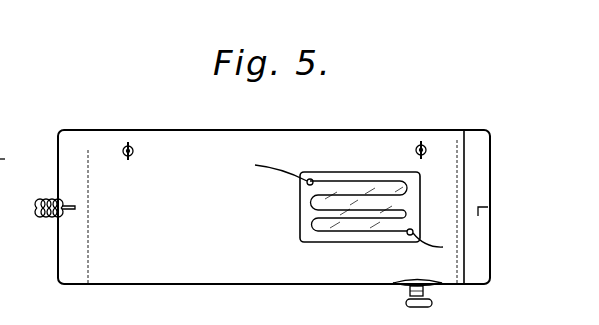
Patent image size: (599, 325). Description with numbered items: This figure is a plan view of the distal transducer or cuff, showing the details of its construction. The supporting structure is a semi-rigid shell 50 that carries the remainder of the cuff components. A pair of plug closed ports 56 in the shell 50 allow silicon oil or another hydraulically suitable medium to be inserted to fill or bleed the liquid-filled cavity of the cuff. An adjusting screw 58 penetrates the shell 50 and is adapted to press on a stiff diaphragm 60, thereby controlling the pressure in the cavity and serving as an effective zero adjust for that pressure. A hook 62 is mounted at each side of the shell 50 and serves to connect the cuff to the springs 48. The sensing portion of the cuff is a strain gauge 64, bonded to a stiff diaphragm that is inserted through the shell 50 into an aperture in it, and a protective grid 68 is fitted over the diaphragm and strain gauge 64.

The springs 48 is at (50, 213).
The semi-rigid shell 50 is at (180, 228).
The plug closed ports 56 is at (132, 145).
The adjusting screw 58 is at (432, 304).
The stiff diaphragm 60 is at (400, 280).
The hook 62 is at (67, 205).
The strain gauge 64 is at (296, 227).
The protective grid 68 is at (349, 197).